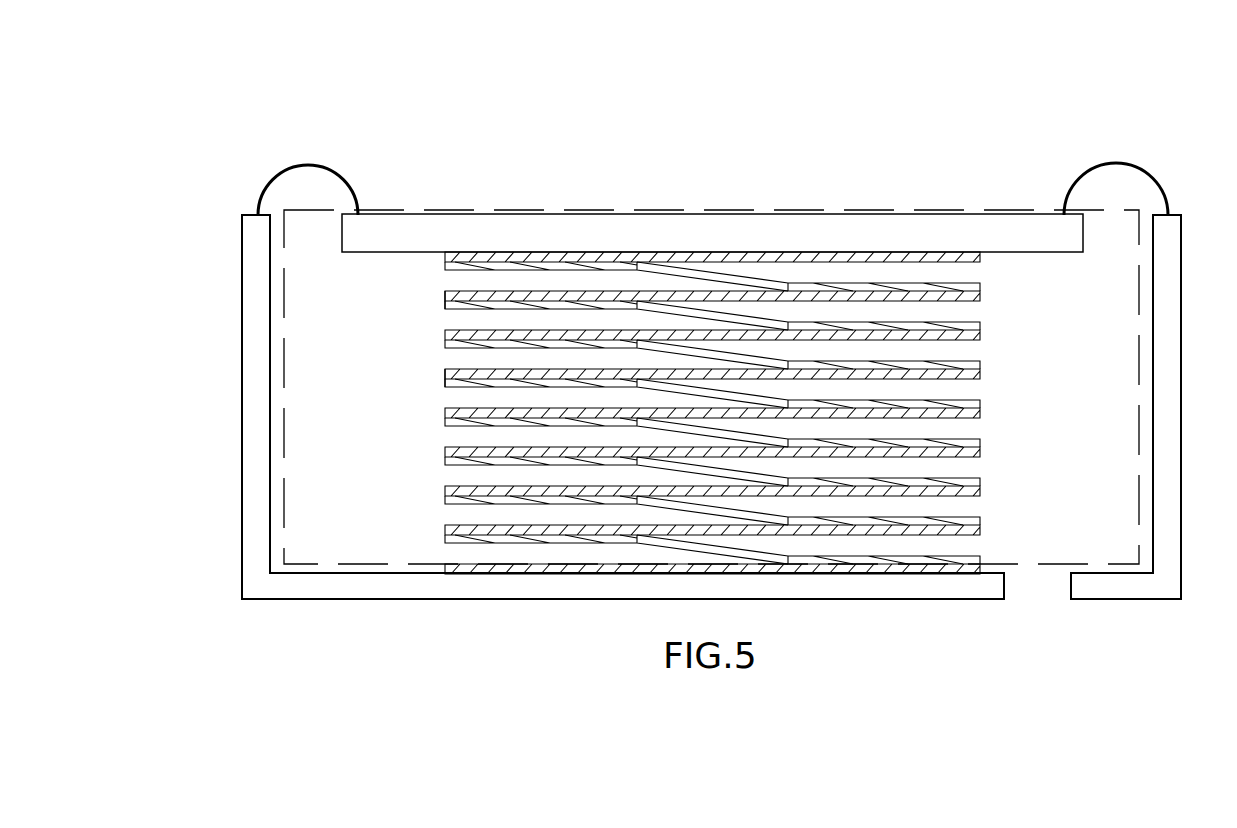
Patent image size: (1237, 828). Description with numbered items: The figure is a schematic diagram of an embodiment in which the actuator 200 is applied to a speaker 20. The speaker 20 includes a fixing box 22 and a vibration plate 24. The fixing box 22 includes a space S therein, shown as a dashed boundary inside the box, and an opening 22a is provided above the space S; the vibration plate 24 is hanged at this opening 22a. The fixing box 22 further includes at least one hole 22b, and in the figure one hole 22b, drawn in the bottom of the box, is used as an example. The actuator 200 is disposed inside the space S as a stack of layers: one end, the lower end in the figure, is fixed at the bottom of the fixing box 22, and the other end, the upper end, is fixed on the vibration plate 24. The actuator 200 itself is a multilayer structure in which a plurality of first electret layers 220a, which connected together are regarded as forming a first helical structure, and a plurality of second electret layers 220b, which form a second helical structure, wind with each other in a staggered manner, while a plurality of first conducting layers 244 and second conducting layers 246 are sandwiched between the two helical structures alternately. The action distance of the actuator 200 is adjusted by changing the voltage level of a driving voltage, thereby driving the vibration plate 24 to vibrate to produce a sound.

The speaker 20 is at (701, 372).
The fixing box 22 is at (739, 404).
The opening 22a is at (1109, 242).
The hole 22b is at (1038, 602).
The vibration plate 24 is at (962, 229).
The actuator 200 is at (617, 413).
The first electret layer 220a is at (710, 330).
The second electret layer 220b is at (445, 300).
The first conducting layer 244 is at (980, 257).
The second conducting layer 246 is at (980, 301).
The space S is at (1141, 357).